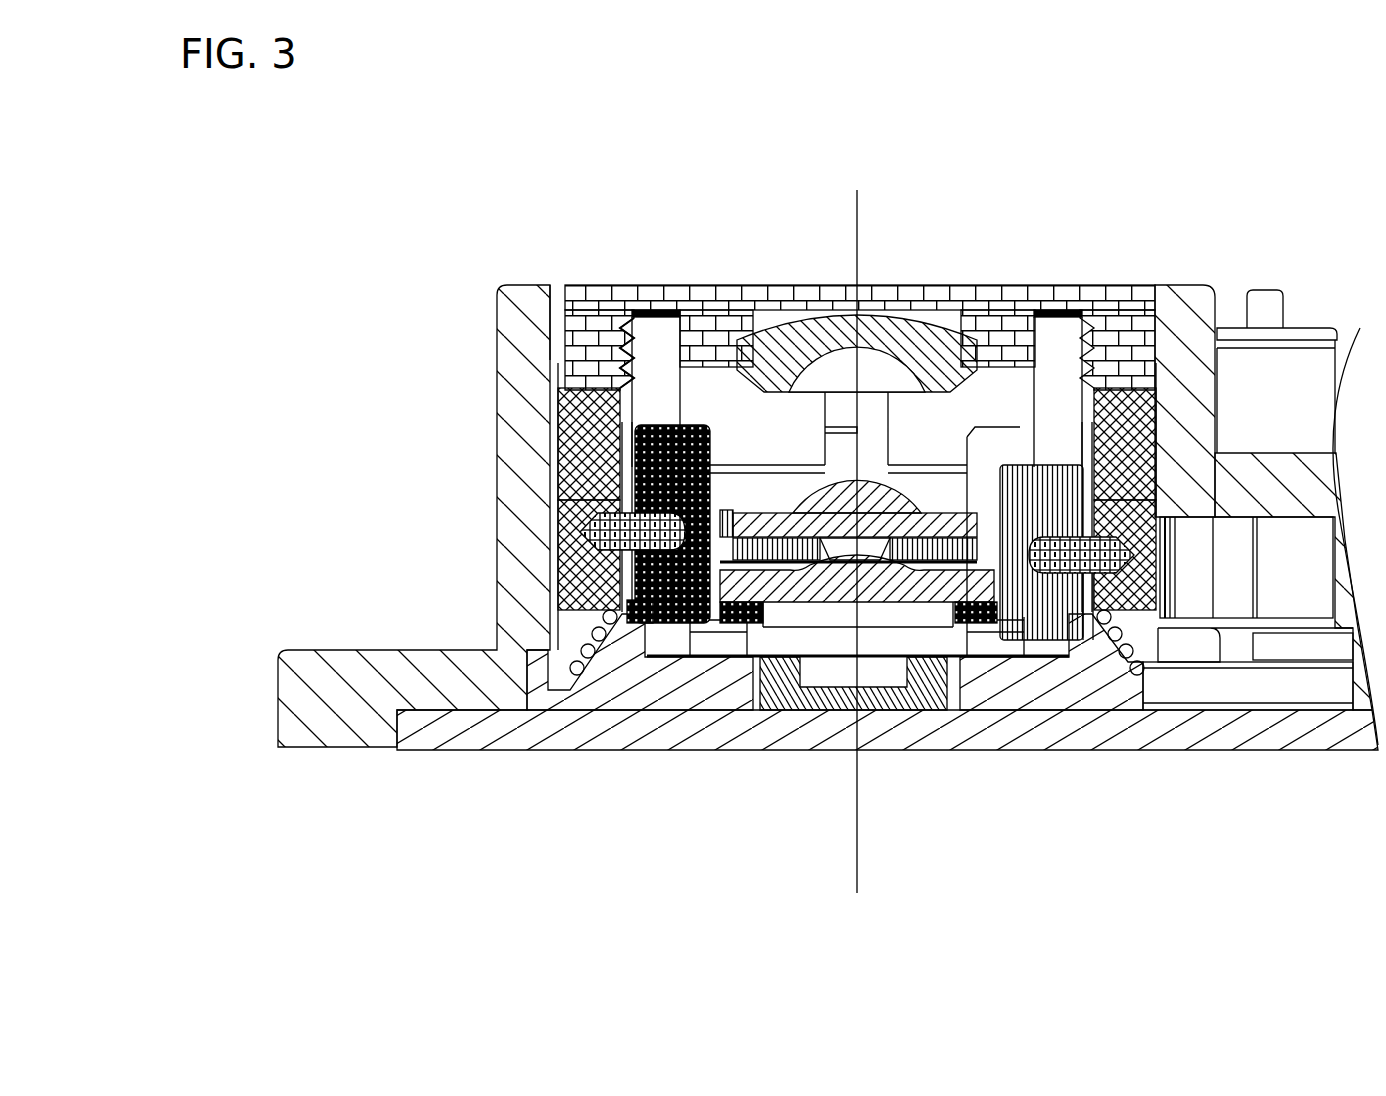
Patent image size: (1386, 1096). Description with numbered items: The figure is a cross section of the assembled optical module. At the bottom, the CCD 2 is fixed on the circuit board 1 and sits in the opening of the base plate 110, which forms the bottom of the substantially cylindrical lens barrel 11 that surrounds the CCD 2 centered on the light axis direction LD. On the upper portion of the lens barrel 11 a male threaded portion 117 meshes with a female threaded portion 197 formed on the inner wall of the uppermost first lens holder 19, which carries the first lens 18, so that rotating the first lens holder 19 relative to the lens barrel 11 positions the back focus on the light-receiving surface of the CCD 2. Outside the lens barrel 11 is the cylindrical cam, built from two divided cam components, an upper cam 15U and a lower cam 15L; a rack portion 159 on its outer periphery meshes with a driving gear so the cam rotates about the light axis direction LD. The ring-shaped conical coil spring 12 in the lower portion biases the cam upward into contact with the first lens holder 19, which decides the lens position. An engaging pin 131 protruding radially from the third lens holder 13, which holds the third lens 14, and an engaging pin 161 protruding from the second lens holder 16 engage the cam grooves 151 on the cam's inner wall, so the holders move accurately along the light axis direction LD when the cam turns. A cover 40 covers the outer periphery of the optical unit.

The circuit board 1 is at (950, 745).
The CCD 2 is at (880, 693).
The lens barrel 11 is at (632, 312).
The conical coil spring 12 is at (595, 640).
The third lens holder 13 is at (685, 625).
The third lens 14 is at (817, 583).
The upper cam 15U is at (552, 422).
The lower cam 15L is at (558, 566).
The second lens holder 16 is at (1035, 620).
The first lens 18 is at (813, 333).
The first lens holder 19 is at (645, 287).
The cover 40 is at (363, 658).
The base plate 110 is at (727, 680).
The male threaded portion 117 is at (545, 297).
The engaging pin 131 is at (575, 522).
The cam groove 151 is at (553, 497).
The rack portion 159 is at (1170, 565).
The engaging pin 161 is at (1085, 560).
The female threaded portion 197 is at (630, 313).
The light axis direction LD is at (857, 893).